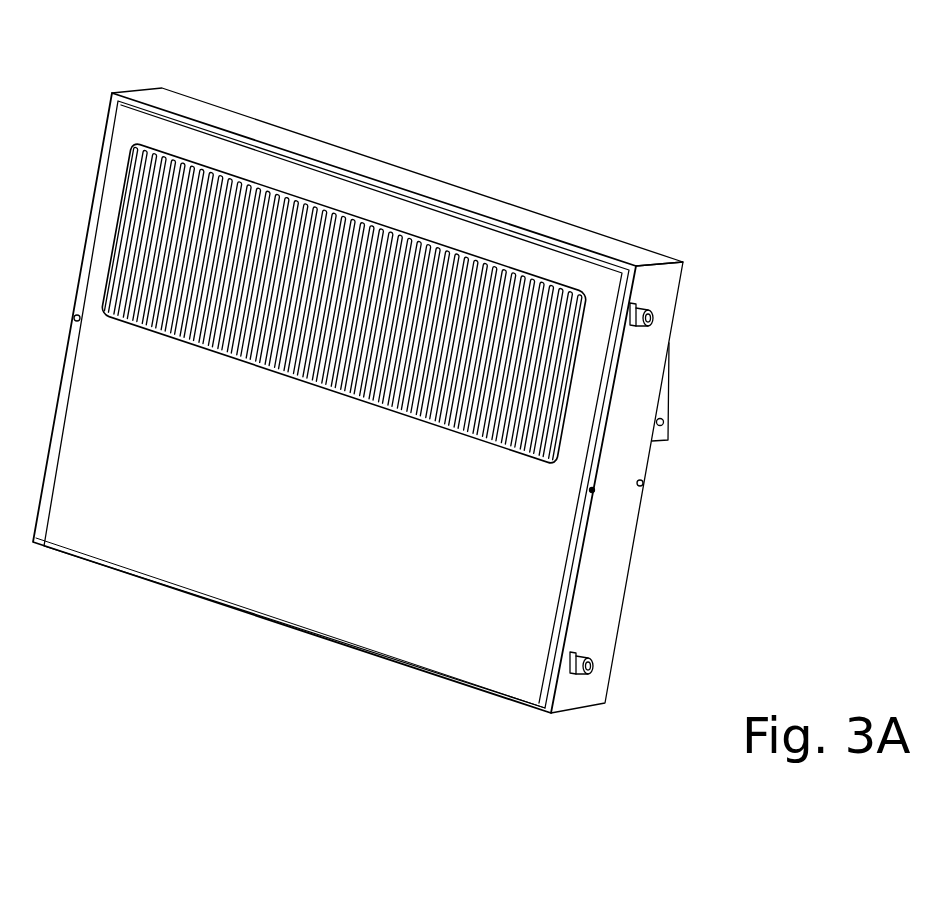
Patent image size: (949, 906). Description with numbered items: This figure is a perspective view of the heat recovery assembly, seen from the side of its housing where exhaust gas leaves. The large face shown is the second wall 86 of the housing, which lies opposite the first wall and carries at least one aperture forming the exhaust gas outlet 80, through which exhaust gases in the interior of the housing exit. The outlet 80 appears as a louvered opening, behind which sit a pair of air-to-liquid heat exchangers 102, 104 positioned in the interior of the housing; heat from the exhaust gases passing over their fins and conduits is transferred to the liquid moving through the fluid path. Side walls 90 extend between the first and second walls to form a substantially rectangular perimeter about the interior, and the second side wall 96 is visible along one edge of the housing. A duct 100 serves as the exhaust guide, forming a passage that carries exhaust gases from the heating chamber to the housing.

The exhaust gas outlet 80 is at (359, 266).
The second wall 86 is at (268, 567).
The side walls 90 is at (345, 158).
The second side wall 96 is at (595, 621).
The duct 100 is at (670, 407).
The heat exchanger 102 is at (223, 243).
The heat exchanger 104 is at (447, 293).